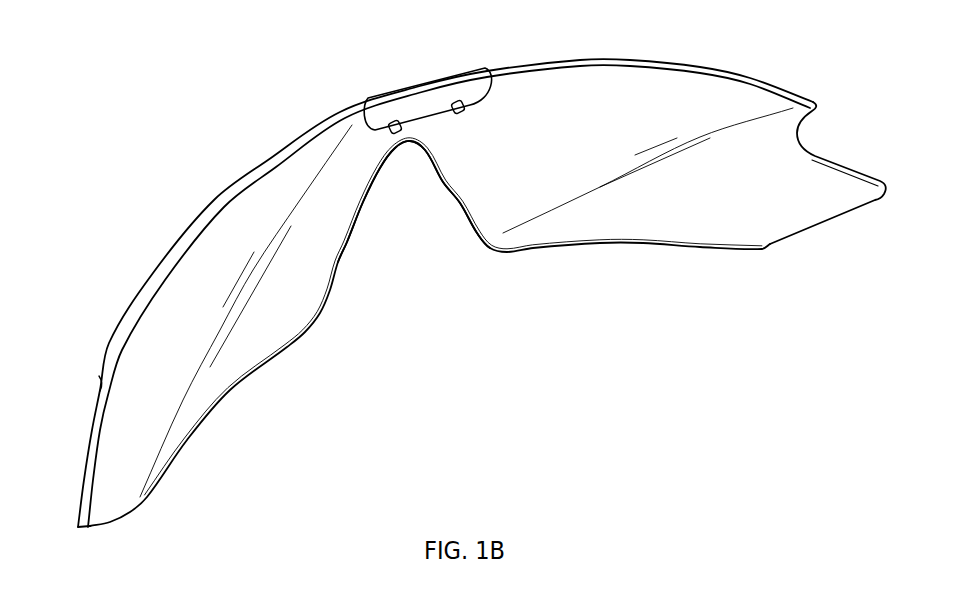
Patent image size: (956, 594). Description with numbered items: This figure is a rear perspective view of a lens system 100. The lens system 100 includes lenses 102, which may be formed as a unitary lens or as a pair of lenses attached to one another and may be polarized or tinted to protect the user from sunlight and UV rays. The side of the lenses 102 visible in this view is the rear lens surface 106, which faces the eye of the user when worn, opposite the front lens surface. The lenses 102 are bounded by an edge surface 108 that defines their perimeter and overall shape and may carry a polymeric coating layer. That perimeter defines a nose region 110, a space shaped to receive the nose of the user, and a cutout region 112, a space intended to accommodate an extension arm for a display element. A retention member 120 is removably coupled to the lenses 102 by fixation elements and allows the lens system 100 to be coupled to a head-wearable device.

The lens system 100 is at (482, 268).
The lenses 102 is at (270, 187).
The lens surface 106 is at (643, 230).
The edge surface 108 is at (662, 62).
The nose region 110 is at (426, 222).
The cutout region 112 is at (862, 150).
The retention member 120 is at (420, 105).